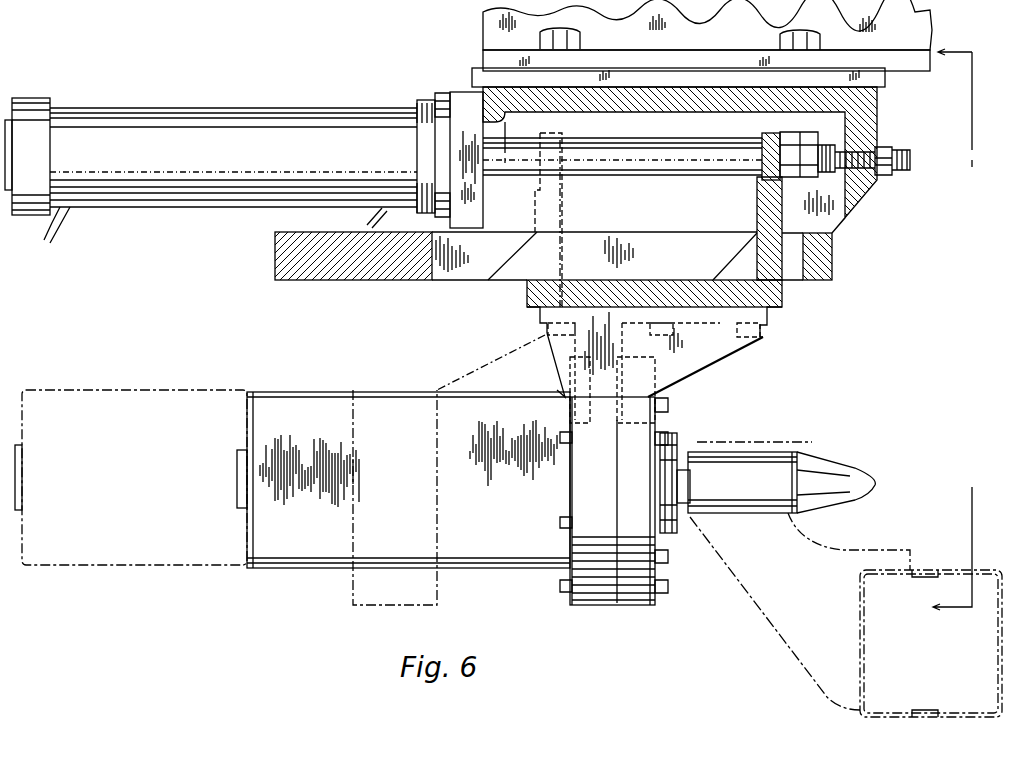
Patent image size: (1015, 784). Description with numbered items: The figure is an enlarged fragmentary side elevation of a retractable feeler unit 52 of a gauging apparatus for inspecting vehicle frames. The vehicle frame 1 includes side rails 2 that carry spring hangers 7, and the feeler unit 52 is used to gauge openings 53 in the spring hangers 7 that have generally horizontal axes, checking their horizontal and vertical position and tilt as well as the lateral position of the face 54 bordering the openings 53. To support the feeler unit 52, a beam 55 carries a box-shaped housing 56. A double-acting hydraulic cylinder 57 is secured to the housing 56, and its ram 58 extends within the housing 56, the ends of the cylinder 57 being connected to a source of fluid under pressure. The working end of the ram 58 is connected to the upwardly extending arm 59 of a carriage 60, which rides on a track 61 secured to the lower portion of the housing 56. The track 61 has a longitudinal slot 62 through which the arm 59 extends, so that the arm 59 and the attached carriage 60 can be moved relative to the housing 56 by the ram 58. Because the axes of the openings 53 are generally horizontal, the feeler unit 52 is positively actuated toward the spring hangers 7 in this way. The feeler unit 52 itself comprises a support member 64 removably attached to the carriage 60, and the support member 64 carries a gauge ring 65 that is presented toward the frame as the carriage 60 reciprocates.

The vehicle frame 1 is at (840, 722).
The side rails 2 is at (957, 572).
The spring hangers 7 is at (745, 655).
The feeler unit 52 is at (323, 592).
The openings 53 is at (790, 452).
The face 54 is at (690, 440).
The beam 55 is at (927, 40).
The housing 56 is at (877, 114).
The double-acting hydraulic cylinder 57 is at (250, 108).
The ram 58 is at (635, 140).
The arm 59 is at (757, 202).
The carriage 60 is at (778, 310).
The track 61 is at (274, 248).
The longitudinal slot 62 is at (612, 235).
The support member 64 is at (725, 345).
The gauge ring 65 is at (645, 603).